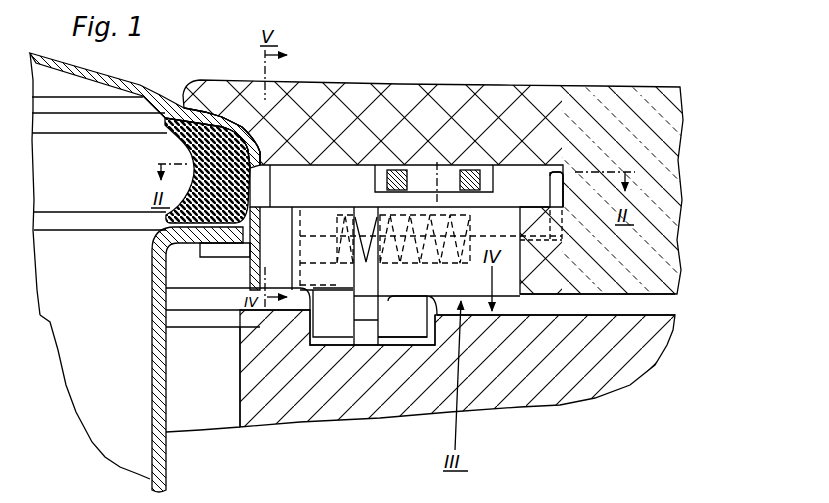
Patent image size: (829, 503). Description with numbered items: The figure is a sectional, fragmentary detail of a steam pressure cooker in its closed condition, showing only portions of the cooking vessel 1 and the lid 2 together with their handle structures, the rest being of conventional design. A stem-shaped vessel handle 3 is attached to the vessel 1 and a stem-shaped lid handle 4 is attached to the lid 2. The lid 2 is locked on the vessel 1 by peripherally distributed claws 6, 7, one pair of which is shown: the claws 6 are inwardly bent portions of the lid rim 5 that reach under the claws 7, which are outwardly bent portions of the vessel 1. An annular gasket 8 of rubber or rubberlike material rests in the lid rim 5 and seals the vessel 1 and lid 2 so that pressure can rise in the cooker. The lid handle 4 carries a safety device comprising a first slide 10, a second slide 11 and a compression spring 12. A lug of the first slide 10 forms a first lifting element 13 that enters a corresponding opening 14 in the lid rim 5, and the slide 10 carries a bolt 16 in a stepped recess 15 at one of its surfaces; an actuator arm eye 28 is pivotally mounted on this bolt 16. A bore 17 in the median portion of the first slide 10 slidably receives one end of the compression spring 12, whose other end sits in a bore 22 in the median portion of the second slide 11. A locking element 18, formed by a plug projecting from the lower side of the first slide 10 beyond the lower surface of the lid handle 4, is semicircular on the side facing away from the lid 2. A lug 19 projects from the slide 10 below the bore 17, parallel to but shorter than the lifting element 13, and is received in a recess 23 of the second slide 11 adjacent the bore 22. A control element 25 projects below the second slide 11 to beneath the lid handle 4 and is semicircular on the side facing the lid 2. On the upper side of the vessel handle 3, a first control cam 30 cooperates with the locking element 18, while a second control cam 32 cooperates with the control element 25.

The cooking vessel 1 is at (55, 291).
The lid 2 is at (48, 183).
The vessel handle 3 is at (544, 388).
The lid handle 4 is at (431, 95).
The lid rim 5 is at (247, 137).
The claws 6 is at (218, 253).
The claws 7 is at (193, 238).
The annular gasket 8 is at (193, 123).
The first slide 10 is at (505, 300).
The second slide 11 is at (324, 333).
The compression spring 12 is at (376, 312).
The first lifting element 13 is at (287, 177).
The opening 14 is at (276, 167).
The stepped recess 15 is at (602, 160).
The bolt 16 is at (493, 167).
The bore 17 is at (470, 218).
The locking element 18 is at (408, 330).
The lug 19 is at (358, 305).
The bore 22 is at (348, 212).
The recess 23 is at (268, 323).
The control element 25 is at (342, 293).
The eye 28 is at (437, 178).
The first control cam 30 is at (428, 310).
The second control cam 32 is at (306, 332).